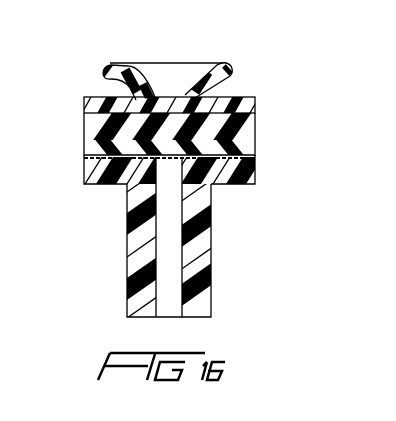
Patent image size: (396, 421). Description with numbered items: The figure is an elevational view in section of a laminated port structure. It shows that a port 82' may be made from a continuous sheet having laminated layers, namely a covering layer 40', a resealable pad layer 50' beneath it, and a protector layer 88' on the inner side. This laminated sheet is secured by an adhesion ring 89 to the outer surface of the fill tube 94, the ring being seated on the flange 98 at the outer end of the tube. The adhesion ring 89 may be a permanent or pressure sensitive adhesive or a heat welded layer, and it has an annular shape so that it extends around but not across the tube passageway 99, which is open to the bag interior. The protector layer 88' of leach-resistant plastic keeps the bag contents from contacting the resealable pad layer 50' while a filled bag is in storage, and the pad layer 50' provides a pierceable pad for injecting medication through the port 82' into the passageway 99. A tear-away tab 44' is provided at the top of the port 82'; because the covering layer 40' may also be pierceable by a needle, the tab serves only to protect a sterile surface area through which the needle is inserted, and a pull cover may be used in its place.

The tear-away tab 44′ is at (172, 68).
The port 82′ is at (236, 80).
The covering layer 40′ is at (257, 100).
The resealable pad layer 50′ is at (257, 120).
The protector layer 88′ is at (257, 147).
The adhesion ring 89 is at (84, 156).
The flange 98 is at (240, 184).
The fill tube 94 is at (213, 238).
The tube passageway 99 is at (165, 252).